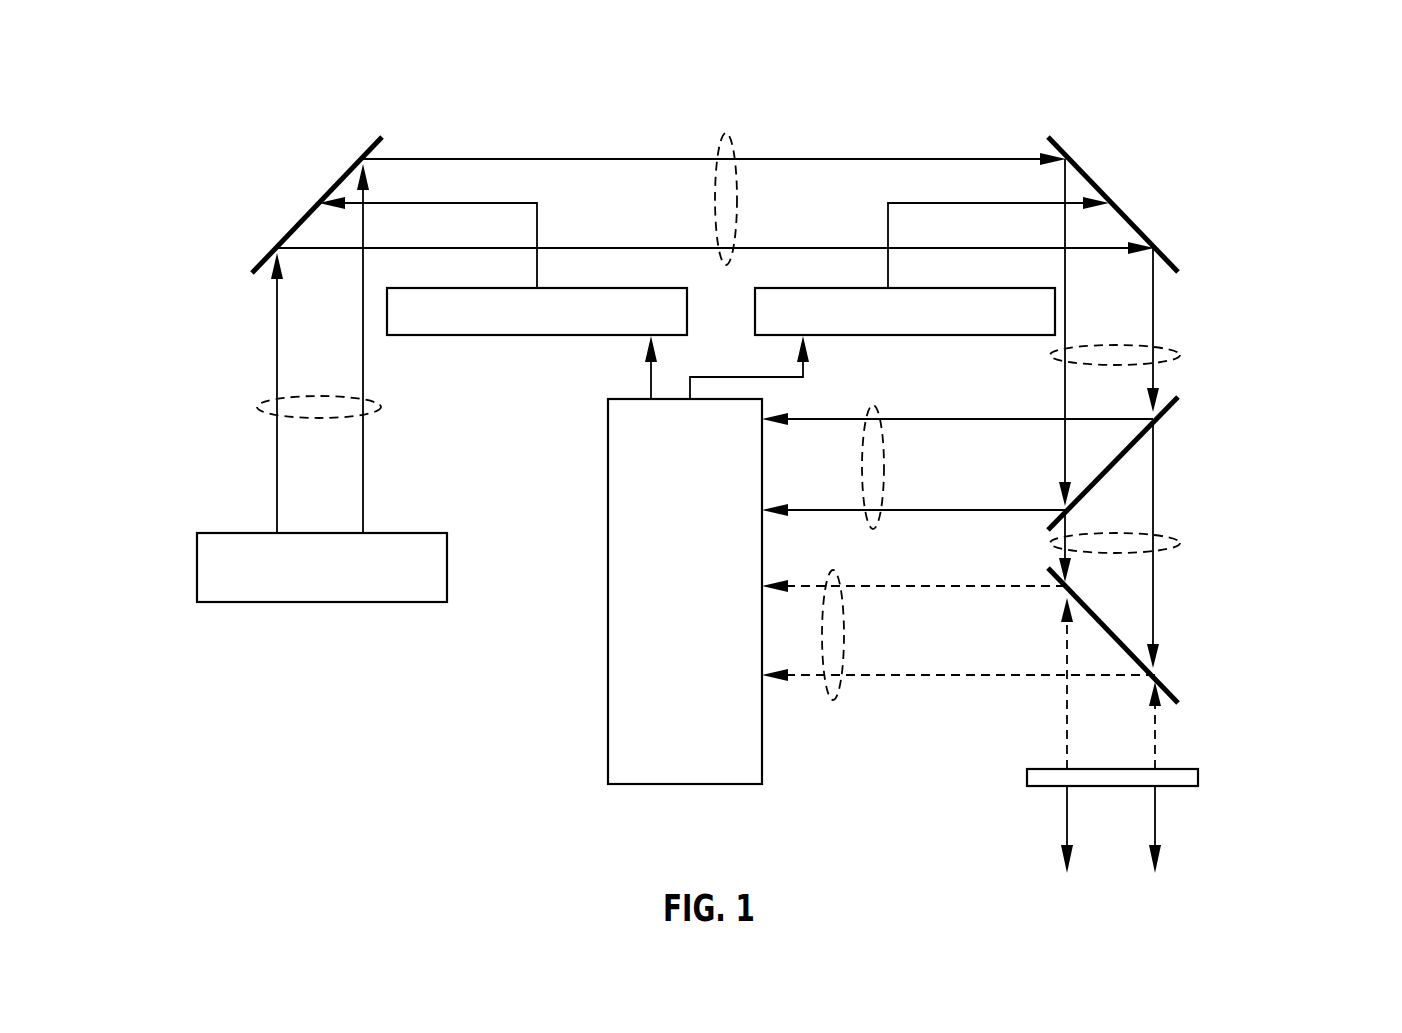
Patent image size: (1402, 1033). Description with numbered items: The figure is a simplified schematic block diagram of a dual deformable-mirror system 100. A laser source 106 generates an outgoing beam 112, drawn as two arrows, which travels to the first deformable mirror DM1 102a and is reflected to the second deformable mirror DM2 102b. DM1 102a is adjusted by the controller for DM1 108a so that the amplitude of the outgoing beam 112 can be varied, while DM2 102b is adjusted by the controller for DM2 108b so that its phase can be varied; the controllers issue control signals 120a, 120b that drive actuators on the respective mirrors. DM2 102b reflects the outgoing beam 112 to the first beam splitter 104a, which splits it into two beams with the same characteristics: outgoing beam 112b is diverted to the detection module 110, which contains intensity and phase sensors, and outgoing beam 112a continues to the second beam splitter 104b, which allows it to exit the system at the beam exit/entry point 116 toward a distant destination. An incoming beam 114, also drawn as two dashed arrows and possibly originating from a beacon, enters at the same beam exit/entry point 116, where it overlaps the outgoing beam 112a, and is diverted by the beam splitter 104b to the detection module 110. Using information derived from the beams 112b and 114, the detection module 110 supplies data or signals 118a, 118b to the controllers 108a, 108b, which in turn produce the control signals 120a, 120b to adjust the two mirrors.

The dual-DM system 100 is at (1250, 136).
The first deformable mirror DM1 102a is at (355, 146).
The second deformable mirror DM2 102b is at (1085, 158).
The beam splitter 104a is at (1180, 411).
The beam splitter 104b is at (1180, 686).
The laser source 106 is at (400, 532).
The controller for DM1 108a is at (598, 288).
The controller for DM2 108b is at (966, 288).
The detection module 110 is at (608, 483).
The outgoing beam 112 is at (729, 127).
The outgoing beam 112a is at (1182, 543).
The outgoing beam 112b is at (875, 530).
The incoming beam 114 is at (838, 700).
The beam exit/entry point 116 is at (1208, 779).
The data/signal to DM1 controller 118a is at (651, 372).
The data/signal to DM2 controller 118b is at (781, 376).
The control signal for DM1 120a is at (443, 200).
The control signal for DM2 120b is at (935, 200).